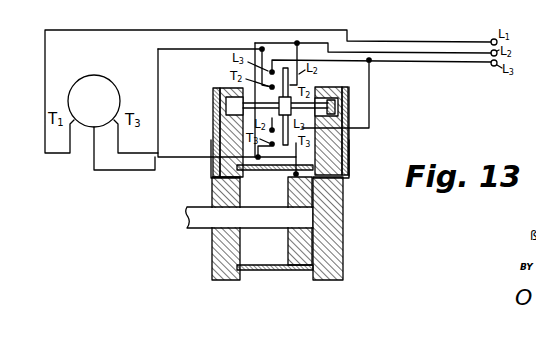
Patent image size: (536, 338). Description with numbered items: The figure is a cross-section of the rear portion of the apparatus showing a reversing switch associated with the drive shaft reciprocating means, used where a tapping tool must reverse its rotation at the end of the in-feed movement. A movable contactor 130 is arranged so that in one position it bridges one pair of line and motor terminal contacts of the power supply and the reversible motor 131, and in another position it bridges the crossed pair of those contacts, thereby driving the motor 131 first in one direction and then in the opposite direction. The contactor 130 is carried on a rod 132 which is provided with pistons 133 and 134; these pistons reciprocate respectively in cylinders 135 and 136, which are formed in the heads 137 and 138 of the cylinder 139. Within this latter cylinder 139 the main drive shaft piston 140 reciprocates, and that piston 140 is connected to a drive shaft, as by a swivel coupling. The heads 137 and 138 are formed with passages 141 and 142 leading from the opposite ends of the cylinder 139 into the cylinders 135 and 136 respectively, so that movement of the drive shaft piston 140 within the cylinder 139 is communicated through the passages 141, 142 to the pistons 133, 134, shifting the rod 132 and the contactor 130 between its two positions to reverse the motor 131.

The movable contactor 130 is at (313, 88).
The reversible motor 131 is at (95, 80).
The rod 132 is at (346, 138).
The piston 133 is at (238, 105).
The piston 134 is at (334, 108).
The cylinder 135 is at (228, 100).
The cylinder 136 is at (344, 100).
The head 137 is at (227, 272).
The head 138 is at (333, 275).
The cylinder 139 is at (275, 272).
The main drive shaft piston 140 is at (288, 243).
The passage 141 is at (213, 171).
The passage 142 is at (346, 176).